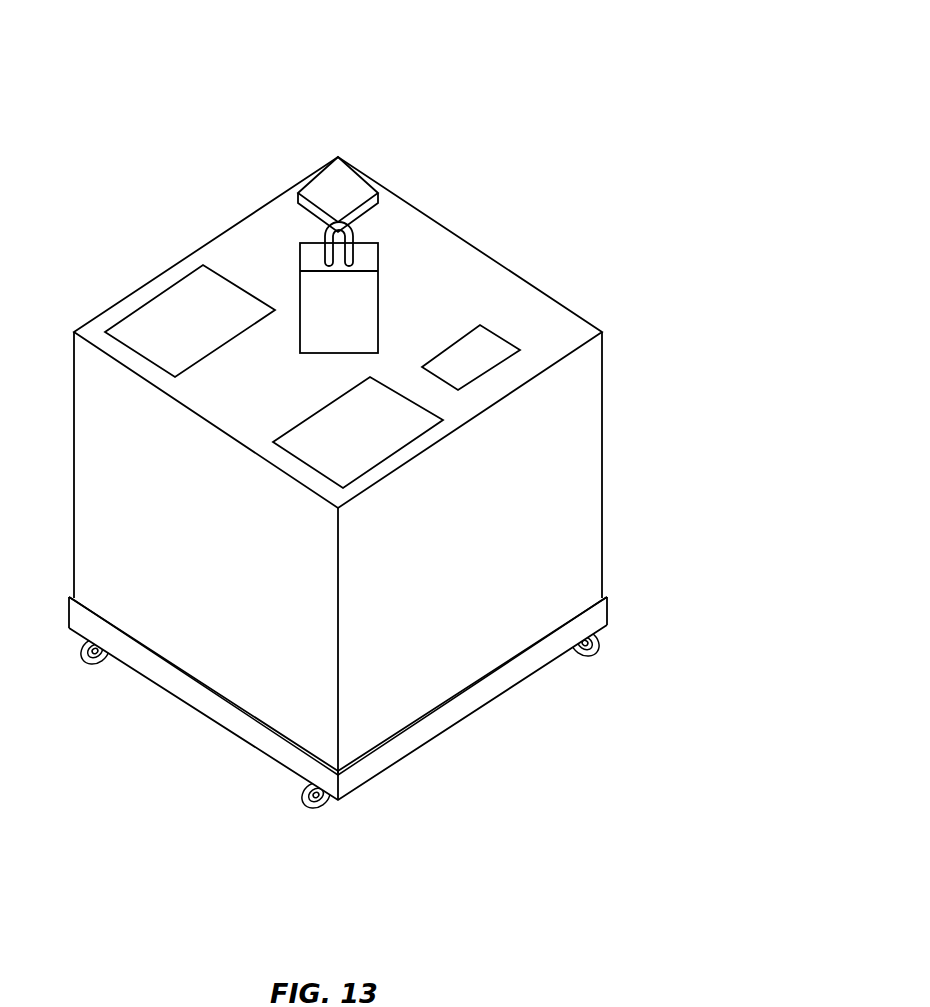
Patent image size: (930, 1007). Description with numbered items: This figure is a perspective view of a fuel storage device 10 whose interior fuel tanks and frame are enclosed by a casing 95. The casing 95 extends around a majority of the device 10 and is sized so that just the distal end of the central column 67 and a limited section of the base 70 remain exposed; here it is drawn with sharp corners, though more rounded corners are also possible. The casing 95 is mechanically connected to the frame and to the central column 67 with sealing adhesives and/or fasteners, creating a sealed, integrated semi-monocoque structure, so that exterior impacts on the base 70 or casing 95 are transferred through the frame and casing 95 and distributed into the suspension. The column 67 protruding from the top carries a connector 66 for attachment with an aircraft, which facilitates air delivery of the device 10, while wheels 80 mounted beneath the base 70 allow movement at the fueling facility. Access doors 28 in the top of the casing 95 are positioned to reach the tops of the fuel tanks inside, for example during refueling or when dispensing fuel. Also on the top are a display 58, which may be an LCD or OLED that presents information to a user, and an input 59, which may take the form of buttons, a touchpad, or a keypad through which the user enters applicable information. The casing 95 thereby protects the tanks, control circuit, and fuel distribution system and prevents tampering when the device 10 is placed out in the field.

The fuel storage device 10 is at (477, 110).
The access door 28 is at (165, 308).
The display 58 is at (484, 368).
The input 59 is at (352, 206).
The connector 66 is at (360, 237).
The central column 67 is at (357, 305).
The base 70 is at (267, 740).
The wheel 80 is at (308, 803).
The casing 95 is at (230, 652).